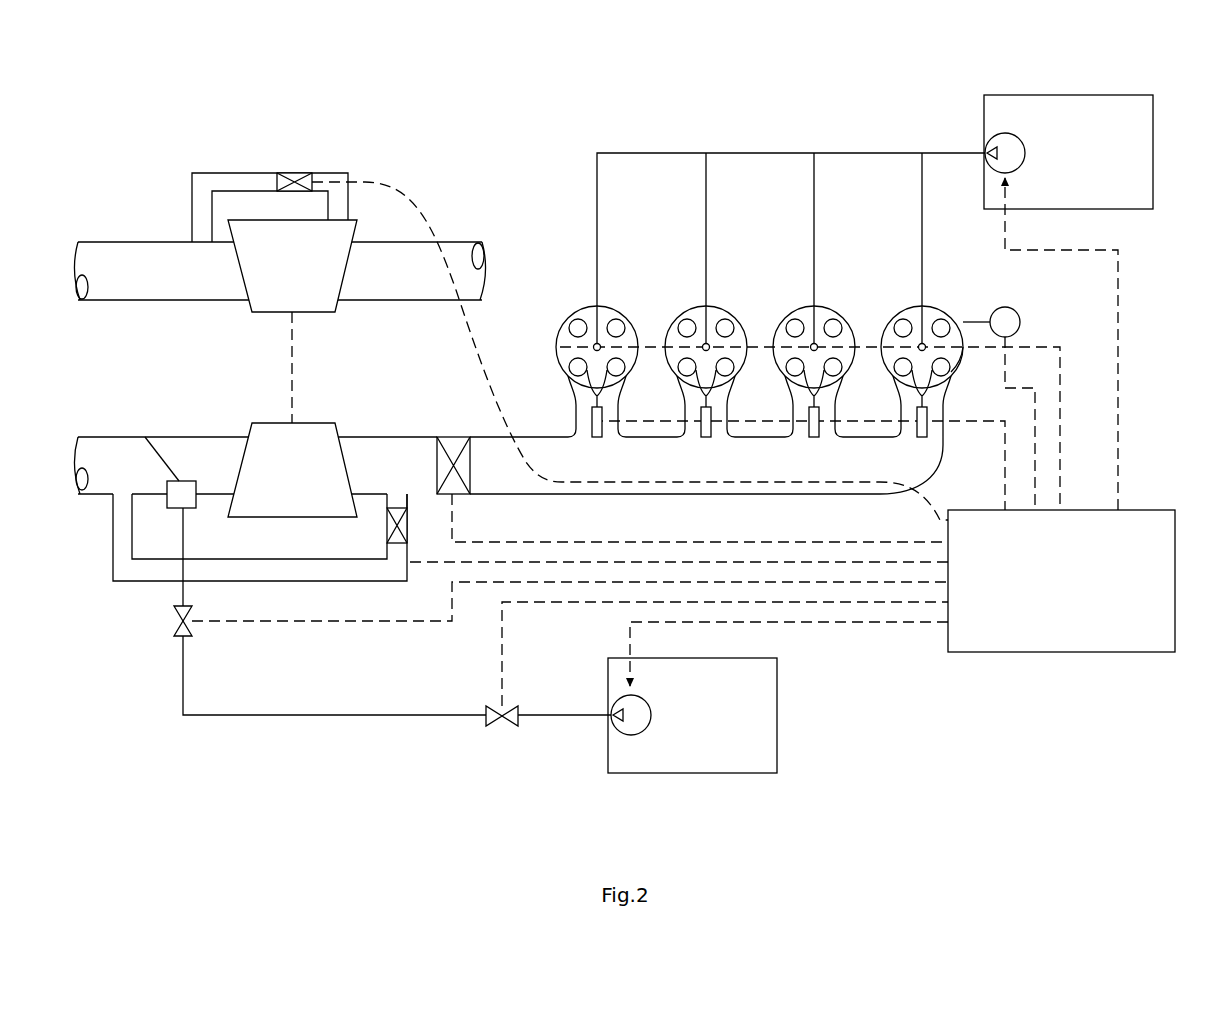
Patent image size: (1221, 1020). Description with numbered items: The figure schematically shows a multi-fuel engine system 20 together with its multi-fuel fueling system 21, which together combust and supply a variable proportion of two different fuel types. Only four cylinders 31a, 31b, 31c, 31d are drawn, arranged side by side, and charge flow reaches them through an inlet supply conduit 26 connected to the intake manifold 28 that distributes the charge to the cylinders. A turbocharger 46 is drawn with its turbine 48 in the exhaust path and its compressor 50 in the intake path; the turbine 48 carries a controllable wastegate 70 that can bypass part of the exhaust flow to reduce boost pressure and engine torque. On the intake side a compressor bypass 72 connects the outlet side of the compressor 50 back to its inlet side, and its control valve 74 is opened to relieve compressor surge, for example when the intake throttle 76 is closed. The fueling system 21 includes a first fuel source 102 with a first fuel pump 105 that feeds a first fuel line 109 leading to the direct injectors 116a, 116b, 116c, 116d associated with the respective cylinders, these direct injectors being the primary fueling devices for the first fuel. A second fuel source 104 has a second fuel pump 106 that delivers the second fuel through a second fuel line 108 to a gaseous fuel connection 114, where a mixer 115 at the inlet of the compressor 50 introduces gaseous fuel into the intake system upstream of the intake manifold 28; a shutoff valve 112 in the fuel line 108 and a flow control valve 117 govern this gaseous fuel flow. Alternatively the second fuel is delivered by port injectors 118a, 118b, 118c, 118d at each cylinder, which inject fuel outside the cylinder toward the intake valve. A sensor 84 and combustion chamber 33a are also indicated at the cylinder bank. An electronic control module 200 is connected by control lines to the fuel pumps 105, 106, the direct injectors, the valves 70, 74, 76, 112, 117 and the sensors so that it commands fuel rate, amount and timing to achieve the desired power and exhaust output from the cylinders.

The multi-fuel engine system 20 is at (504, 162).
The multi-fuel fueling system 21 is at (905, 670).
The inlet supply conduit 26 is at (97, 436).
The intake manifold 28 is at (702, 495).
The cylinder 31a is at (893, 318).
The cylinder 31b is at (785, 318).
The cylinder 31c is at (677, 318).
The cylinder 31d is at (568, 318).
The combustion chamber 33a is at (956, 372).
The turbocharger 46 is at (268, 375).
The turbine 48 is at (292, 266).
The compressor 50 is at (292, 470).
The wastegate 70 is at (296, 172).
The compressor bypass 72 is at (116, 582).
The control valve 74 is at (398, 507).
The intake throttle 76 is at (455, 437).
The sensor 84 is at (999, 308).
The first fuel source 102 is at (1068, 152).
The second fuel source 104 is at (692, 715).
The first fuel pump 105 is at (1019, 140).
The second fuel pump 106 is at (646, 729).
The second fuel line 108 is at (352, 716).
The first fuel line 109 is at (762, 153).
The shutoff valve 112 is at (174, 626).
The gaseous fuel connection 114 is at (181, 509).
The mixer 115 is at (145, 437).
The direct injector 116a is at (925, 343).
The direct injector 116b is at (817, 343).
The direct injector 116c is at (709, 343).
The direct injector 116d is at (600, 343).
The flow control valve 117 is at (504, 727).
The port injector 118a is at (919, 440).
The port injector 118b is at (811, 440).
The port injector 118c is at (703, 440).
The port injector 118d is at (594, 440).
The electronic control module 200 is at (1061, 581).